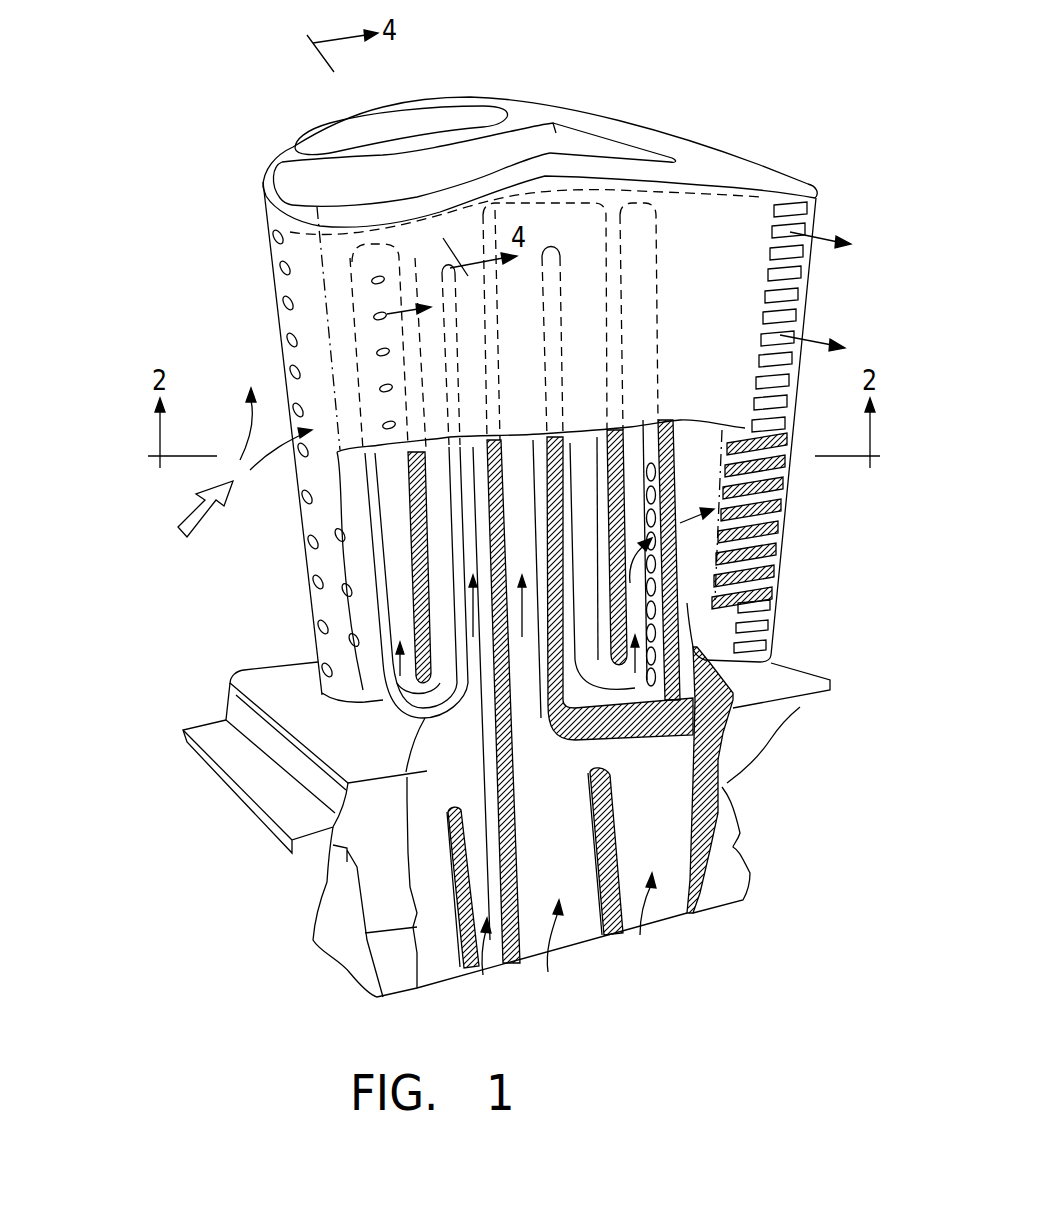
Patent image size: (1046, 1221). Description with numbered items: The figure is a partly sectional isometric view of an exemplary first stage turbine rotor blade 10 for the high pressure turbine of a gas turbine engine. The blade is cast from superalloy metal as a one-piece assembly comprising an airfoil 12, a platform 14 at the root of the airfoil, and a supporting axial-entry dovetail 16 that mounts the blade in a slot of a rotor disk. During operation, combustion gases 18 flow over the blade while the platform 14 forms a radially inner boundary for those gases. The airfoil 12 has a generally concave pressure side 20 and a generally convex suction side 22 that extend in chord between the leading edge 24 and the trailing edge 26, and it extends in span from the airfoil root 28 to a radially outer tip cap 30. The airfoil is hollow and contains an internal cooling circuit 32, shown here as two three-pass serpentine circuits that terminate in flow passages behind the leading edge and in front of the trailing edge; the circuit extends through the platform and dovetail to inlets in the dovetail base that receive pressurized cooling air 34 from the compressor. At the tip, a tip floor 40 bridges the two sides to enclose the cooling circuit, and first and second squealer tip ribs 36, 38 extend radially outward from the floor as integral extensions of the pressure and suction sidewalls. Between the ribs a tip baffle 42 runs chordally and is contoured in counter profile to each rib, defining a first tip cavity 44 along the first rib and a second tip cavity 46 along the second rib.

The turbine rotor blade 10 is at (170, 209).
The airfoil 12 is at (828, 216).
The platform 14 is at (254, 668).
The dovetail 16 is at (327, 883).
The combustion gases 18 is at (188, 512).
The pressure side 20 is at (534, 309).
The suction side 22 is at (270, 238).
The leading edge 24 is at (314, 454).
The trailing edge 26 is at (808, 306).
The airfoil root 28 is at (338, 700).
The tip cap 30 is at (490, 96).
The internal cooling circuit 32 is at (567, 781).
The cooling air 34 is at (548, 972).
The first squealer tip rib 36 is at (580, 151).
The second squealer tip rib 38 is at (548, 102).
The tip floor 40 is at (283, 178).
The tip baffle 42 is at (450, 133).
The first tip cavity 44 is at (342, 202).
The second tip cavity 46 is at (402, 145).